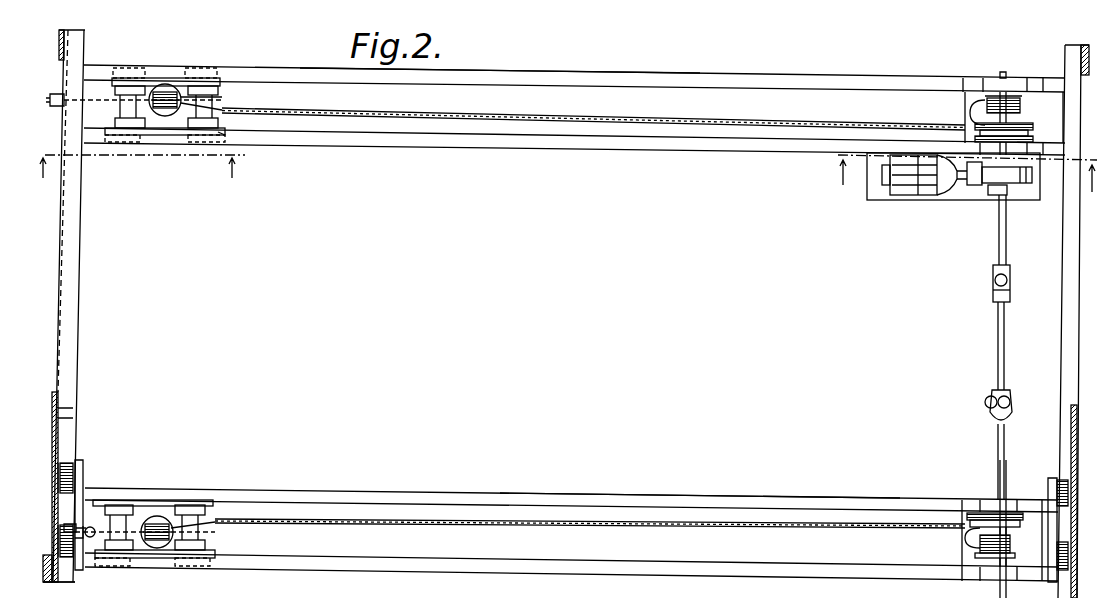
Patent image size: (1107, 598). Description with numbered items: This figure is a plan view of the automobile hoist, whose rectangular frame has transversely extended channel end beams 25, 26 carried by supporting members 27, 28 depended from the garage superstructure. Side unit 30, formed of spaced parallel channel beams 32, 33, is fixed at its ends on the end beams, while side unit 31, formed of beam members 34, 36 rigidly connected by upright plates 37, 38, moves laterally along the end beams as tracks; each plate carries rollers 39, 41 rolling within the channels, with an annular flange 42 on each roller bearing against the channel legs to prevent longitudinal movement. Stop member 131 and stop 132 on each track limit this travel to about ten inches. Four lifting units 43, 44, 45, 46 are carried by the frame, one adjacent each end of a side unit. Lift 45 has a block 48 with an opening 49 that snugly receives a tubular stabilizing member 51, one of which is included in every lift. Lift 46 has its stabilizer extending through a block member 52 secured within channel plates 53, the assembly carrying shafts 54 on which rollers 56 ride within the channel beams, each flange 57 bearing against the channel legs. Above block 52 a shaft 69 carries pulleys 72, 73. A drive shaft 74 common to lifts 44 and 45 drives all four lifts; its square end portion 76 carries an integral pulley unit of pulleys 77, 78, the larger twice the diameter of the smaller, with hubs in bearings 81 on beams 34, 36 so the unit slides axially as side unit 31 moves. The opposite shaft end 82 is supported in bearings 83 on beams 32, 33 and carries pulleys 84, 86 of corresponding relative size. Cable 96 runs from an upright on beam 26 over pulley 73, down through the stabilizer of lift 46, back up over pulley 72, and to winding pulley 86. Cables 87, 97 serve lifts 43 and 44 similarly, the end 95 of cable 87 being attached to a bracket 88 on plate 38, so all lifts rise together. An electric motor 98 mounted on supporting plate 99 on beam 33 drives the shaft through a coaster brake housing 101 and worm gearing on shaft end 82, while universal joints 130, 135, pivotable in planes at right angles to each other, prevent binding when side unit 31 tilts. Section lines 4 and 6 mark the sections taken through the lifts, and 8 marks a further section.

The section line 4- 4 is at (966, 185).
The section line 6- 6 is at (138, 173).
The shaft 8 is at (990, 483).
The end beam 25 is at (1064, 272).
The end beam 26 is at (88, 288).
The supporting member 27 is at (45, 560).
The supporting member 28 is at (86, 40).
The side unit 30 is at (770, 66).
The side unit 31 is at (616, 491).
The channel beam 32 is at (690, 80).
The channel beam 33 is at (690, 156).
The beam member 34 is at (697, 496).
The beam member 36 is at (696, 568).
The upright plate 37 is at (1048, 487).
The upright plate 38 is at (85, 480).
The roller 39 is at (60, 527).
The roller 41 is at (65, 478).
The annular flange 42 is at (80, 465).
The lifting unit 43 is at (171, 497).
The lifting unit 44 is at (968, 524).
The lifting unit 45 is at (979, 76).
The lifting unit 46 is at (189, 63).
The block 48 is at (972, 100).
The opening 49 is at (975, 118).
The tubular stabilizing member 51 is at (212, 98).
The block member 52 is at (148, 115).
The channel plate 53 is at (130, 88).
The shaft 54 is at (205, 112).
The roller 56 is at (197, 142).
The flange 57 is at (218, 135).
The shaft 69 is at (157, 548).
The pulley 72 is at (168, 118).
The pulley 73 is at (170, 90).
The shaft 74 is at (992, 352).
The end portion 76 is at (996, 452).
The pulley 77 is at (945, 538).
The pulley 78 is at (1012, 557).
The bearing 81 is at (1008, 510).
The shaft end 82 is at (1006, 70).
The bearing 83 is at (1015, 88).
The pulley 84 is at (1020, 100).
The pulley 86 is at (1030, 136).
The cable 87 is at (414, 526).
The bracket 88 is at (70, 510).
The end 95 is at (76, 590).
The cable 96 is at (578, 120).
The cable 97 is at (1012, 540).
The electric motor 98 is at (905, 197).
The supporting plate 99 is at (966, 196).
The housing 101 is at (932, 197).
The universal joint 130 is at (992, 278).
The stop member 131 is at (72, 402).
The stop 132 is at (48, 584).
The universal joint 135 is at (985, 398).